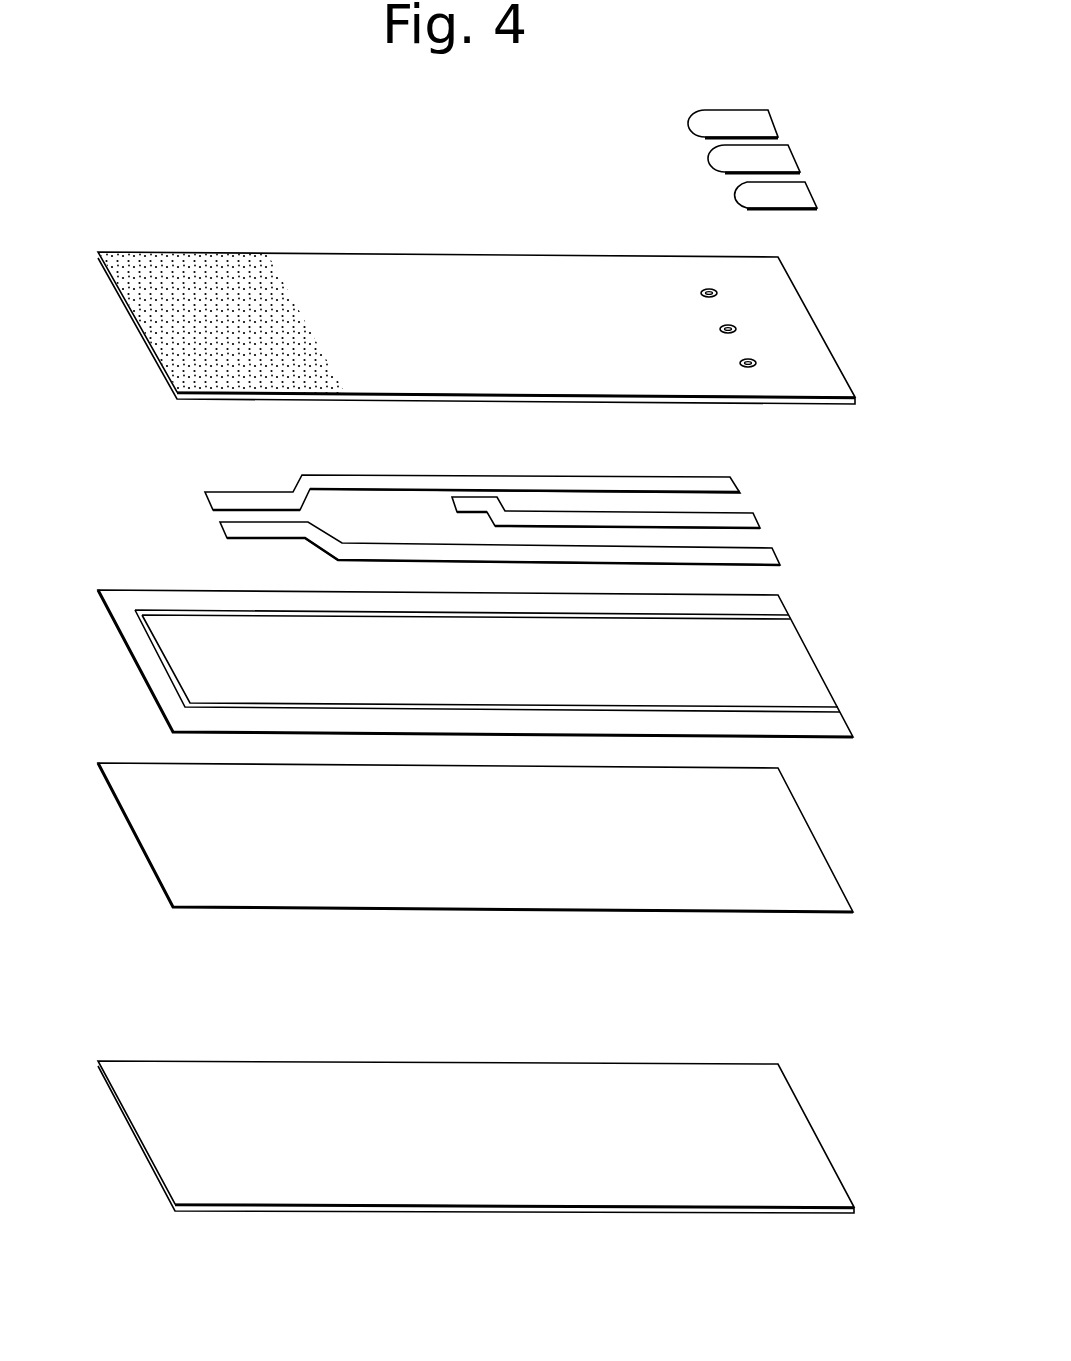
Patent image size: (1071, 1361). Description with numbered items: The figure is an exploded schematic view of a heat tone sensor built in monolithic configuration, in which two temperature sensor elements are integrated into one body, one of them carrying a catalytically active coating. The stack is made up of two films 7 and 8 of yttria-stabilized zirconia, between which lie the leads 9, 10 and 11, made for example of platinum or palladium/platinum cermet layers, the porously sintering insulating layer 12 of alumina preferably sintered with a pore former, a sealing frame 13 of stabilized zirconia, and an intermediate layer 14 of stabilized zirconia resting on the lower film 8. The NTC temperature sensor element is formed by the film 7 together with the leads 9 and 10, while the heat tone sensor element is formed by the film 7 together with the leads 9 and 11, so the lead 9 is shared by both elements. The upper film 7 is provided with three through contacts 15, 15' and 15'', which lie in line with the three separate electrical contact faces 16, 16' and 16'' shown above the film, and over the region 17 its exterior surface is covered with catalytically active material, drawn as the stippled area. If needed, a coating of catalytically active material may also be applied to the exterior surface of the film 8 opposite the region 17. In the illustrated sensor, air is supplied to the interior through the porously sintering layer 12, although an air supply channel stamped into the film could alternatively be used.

The film 7 is at (485, 325).
The film 8 is at (792, 1128).
The lead 9 is at (734, 484).
The lead 10 is at (757, 518).
The lead 11 is at (777, 558).
The porously sintering insulating layer 12 is at (513, 665).
The sealing frame 13 is at (835, 723).
The intermediate layer 14 is at (798, 835).
The through contact 15 is at (698, 251).
The through contact 15' is at (796, 305).
The through contact 15'' is at (796, 407).
The electrical contact face 16 is at (758, 93).
The electrical contact face 16' is at (788, 139).
The electrical contact face 16'' is at (817, 182).
The region 17 is at (208, 278).